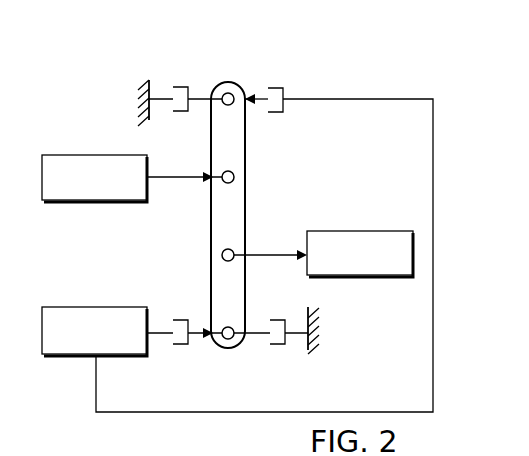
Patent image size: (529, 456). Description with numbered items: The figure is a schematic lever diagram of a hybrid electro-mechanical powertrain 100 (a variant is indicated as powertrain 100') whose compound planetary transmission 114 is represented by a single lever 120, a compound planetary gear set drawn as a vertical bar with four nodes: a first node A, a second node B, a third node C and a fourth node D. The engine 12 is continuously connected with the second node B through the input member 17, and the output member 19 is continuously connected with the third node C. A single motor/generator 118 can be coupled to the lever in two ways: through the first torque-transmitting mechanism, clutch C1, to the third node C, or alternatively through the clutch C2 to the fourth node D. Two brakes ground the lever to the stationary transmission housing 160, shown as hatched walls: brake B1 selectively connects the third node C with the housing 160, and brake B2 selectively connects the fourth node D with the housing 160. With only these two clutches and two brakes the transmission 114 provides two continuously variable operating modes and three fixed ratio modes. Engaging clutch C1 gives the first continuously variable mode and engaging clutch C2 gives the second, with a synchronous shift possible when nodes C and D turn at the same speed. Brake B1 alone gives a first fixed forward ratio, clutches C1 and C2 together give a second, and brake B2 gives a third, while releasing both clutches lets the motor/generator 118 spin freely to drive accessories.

The powertrain 100 is at (64, 59).
The alternate powertrain 100' is at (92, 446).
The engine 12 is at (97, 155).
The input member 17 is at (196, 175).
The output member 19 is at (360, 231).
The compound planetary transmission 114 is at (272, 40).
The motor/generator 118 is at (97, 307).
The lever 120 is at (229, 82).
The transmission housing 160 is at (149, 80).
The first node A is at (232, 182).
The second node B is at (228, 249).
The third node C is at (228, 327).
The fourth node D is at (232, 93).
The brake B1 is at (277, 358).
The brake B2 is at (181, 72).
The first torque-transmitting mechanism C1 is at (180, 358).
The clutch C2 is at (274, 122).